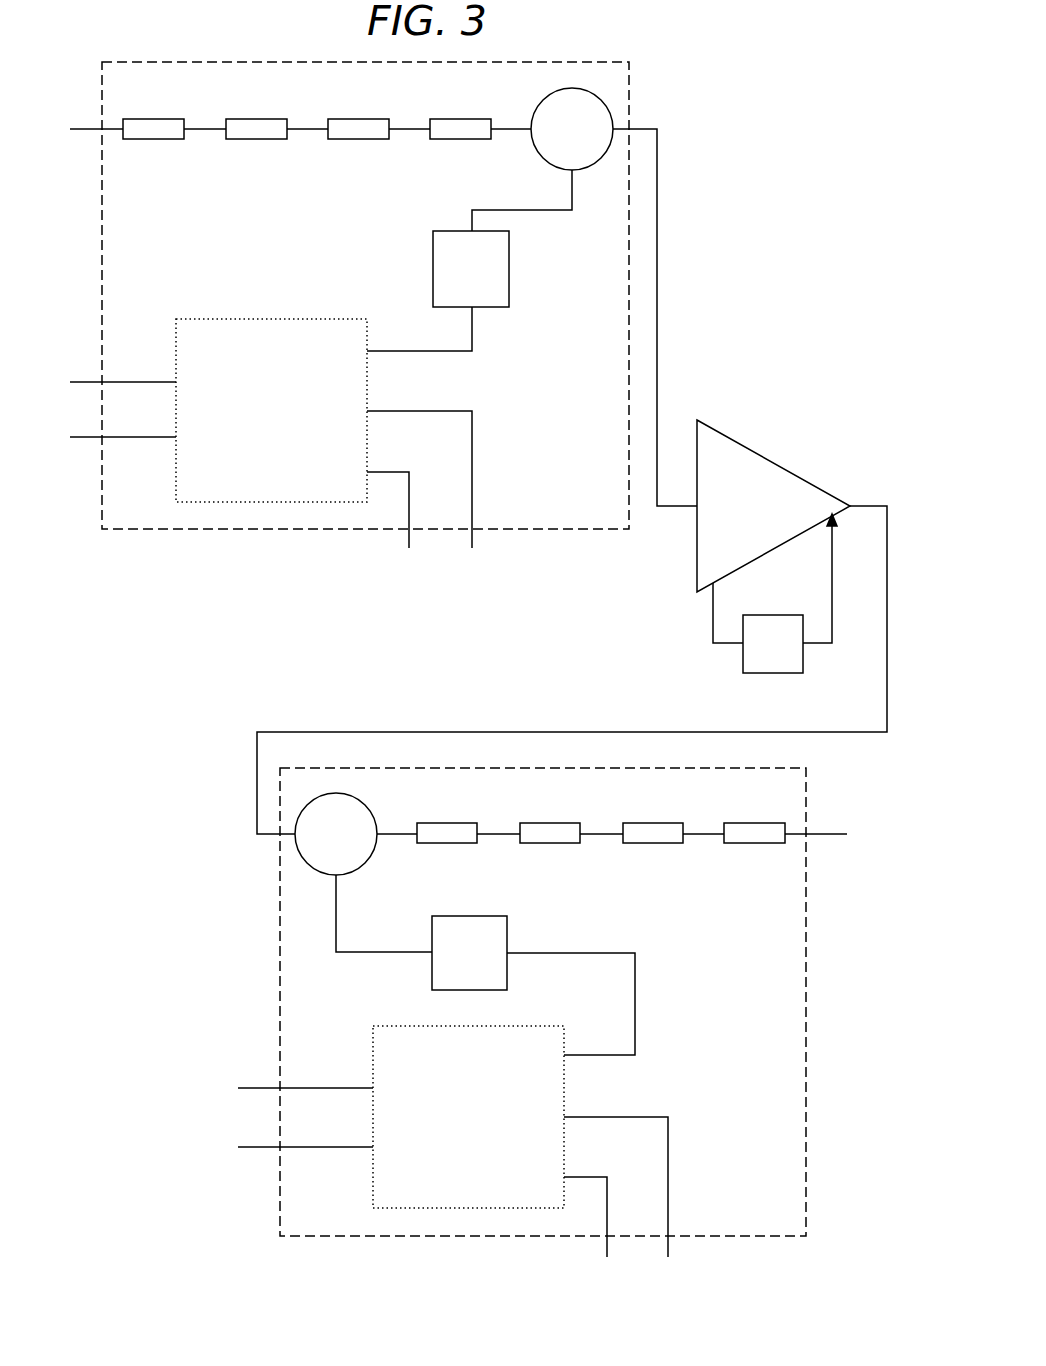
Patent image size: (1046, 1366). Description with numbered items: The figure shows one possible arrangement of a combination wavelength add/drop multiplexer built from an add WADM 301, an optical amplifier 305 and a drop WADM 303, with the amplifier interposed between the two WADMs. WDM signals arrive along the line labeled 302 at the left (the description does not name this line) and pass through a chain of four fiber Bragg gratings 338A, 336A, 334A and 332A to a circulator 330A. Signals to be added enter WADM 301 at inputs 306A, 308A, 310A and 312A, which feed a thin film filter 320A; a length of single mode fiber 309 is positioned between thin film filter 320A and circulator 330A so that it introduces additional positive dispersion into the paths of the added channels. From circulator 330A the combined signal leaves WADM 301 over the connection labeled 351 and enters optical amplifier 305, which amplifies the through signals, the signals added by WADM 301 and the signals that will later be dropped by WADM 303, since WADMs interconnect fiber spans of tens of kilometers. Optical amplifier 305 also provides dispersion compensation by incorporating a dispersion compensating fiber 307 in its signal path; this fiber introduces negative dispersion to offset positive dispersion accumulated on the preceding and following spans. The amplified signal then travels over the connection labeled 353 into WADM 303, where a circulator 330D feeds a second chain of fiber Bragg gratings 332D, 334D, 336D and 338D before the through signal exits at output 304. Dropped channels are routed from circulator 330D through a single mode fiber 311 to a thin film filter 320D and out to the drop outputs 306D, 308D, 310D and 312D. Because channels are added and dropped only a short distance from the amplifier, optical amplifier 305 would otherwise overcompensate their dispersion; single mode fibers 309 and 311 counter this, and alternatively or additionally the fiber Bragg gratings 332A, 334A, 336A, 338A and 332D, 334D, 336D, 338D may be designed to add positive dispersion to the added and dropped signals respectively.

The WADM 301 is at (617, 513).
The input signal line 302 is at (78, 128).
The WADM 303 is at (794, 1217).
The output 304 is at (826, 833).
The optical amplifier 305 is at (786, 517).
The input 306A is at (83, 381).
The output 306D is at (262, 1089).
The dispersion compensating fiber 307 is at (791, 661).
The input 308A is at (83, 436).
The output 308D is at (262, 1148).
The single mode fiber 309 is at (489, 282).
The input 310A is at (472, 543).
The output 310D is at (668, 1250).
The single mode fiber 311 is at (487, 966).
The input 312A is at (409, 546).
The output 312D is at (607, 1246).
The thin film filter 320A is at (273, 319).
The thin film filter 320D is at (502, 1026).
The circulator 330A is at (533, 149).
The circulator 330D is at (370, 812).
The fiber Bragg grating 332A is at (461, 118).
The fiber Bragg grating 332D is at (447, 844).
The fiber Bragg grating 334A is at (360, 118).
The fiber Bragg grating 334D is at (551, 844).
The fiber Bragg grating 336A is at (258, 118).
The fiber Bragg grating 336D is at (653, 844).
The fiber Bragg grating 338A is at (155, 118).
The fiber Bragg grating 338D is at (755, 844).
The signal path 351 is at (657, 316).
The signal path 353 is at (575, 731).